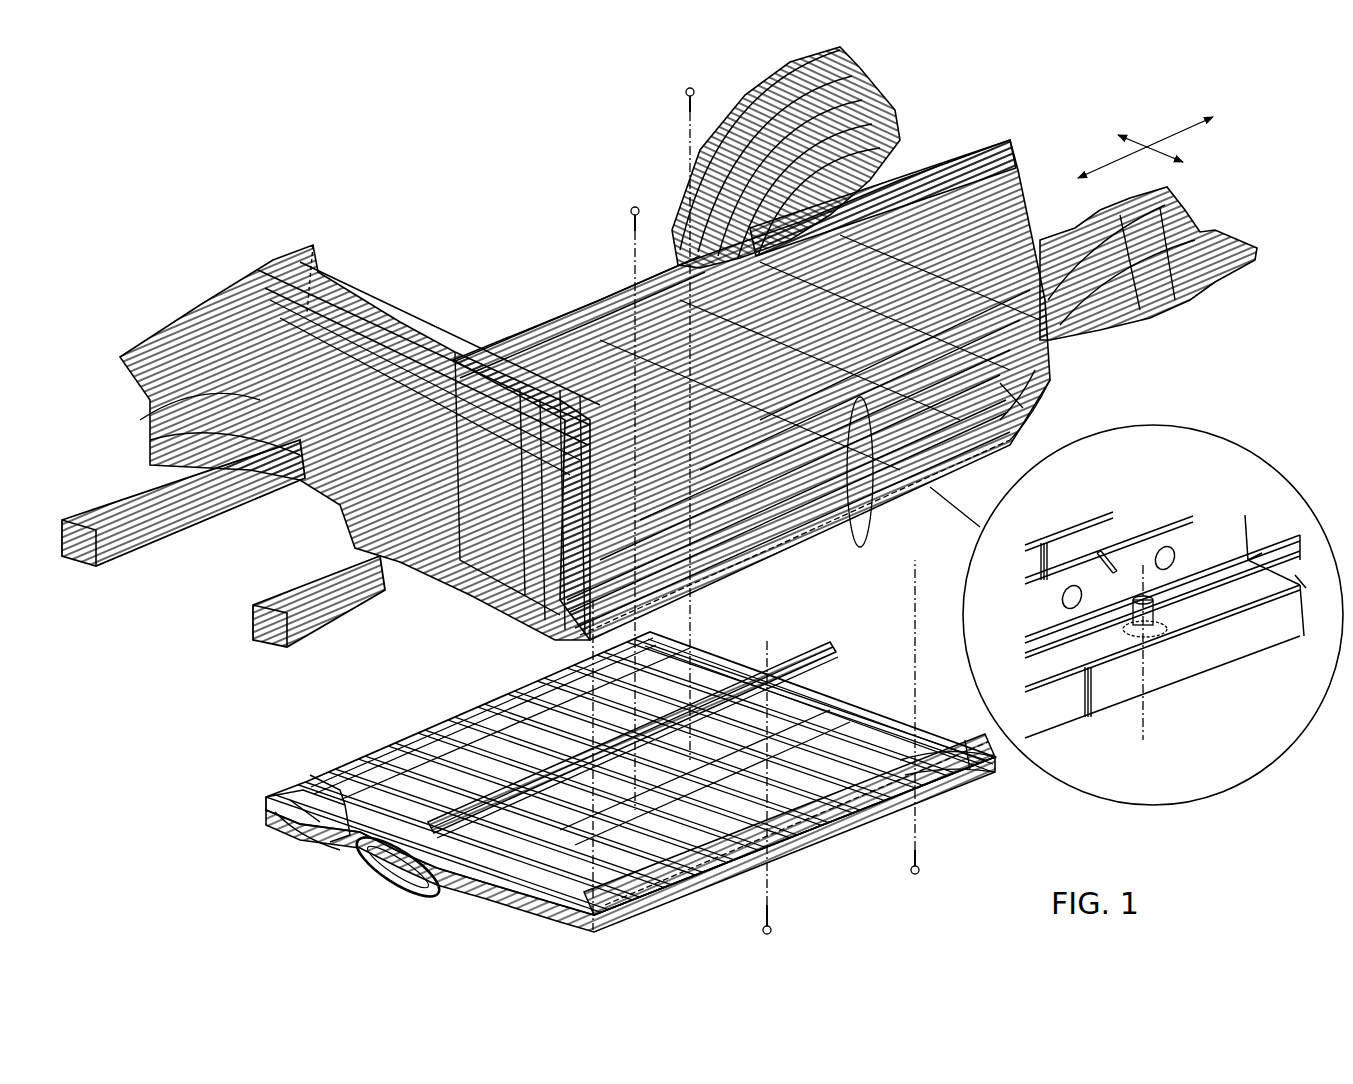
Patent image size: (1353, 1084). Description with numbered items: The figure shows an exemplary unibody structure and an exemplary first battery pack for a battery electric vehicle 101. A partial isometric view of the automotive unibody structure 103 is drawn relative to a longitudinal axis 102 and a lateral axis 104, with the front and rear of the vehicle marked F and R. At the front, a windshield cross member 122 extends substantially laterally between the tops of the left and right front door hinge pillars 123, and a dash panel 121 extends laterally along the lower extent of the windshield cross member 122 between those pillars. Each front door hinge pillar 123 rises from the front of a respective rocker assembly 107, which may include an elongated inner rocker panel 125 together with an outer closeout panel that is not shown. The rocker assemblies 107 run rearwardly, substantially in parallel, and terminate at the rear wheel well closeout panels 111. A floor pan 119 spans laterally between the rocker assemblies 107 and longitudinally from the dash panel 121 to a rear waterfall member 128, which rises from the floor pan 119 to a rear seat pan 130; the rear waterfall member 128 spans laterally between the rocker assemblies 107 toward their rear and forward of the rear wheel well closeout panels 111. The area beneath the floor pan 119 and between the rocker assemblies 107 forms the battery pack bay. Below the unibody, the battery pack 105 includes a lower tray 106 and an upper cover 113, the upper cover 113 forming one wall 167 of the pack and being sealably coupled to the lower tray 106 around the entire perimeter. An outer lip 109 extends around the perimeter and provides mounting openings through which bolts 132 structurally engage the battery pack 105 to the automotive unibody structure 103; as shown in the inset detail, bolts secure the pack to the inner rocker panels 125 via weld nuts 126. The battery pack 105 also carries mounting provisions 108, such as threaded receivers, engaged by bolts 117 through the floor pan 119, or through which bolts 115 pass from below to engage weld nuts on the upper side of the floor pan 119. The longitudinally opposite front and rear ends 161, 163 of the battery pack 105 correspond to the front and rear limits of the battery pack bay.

The battery electric vehicle 101 is at (392, 138).
The longitudinal axis 102 is at (1168, 133).
The automotive unibody structure 103 is at (953, 101).
The lateral axis 104 is at (1178, 155).
The battery pack 105 is at (330, 712).
The lower tray 106 is at (287, 851).
The rocker assembly 107 is at (474, 335).
The mounting provision 108 is at (500, 740).
The outer lip 109 is at (950, 790).
The rear wheel well closeout panel 111 is at (670, 186).
The upper cover 113 is at (890, 745).
The bolt 115 is at (757, 918).
The bolt 117 is at (686, 94).
The floor pan 119 is at (622, 328).
The dash panel 121 is at (292, 492).
The windshield cross member 122 is at (372, 345).
The front door hinge pillar 123 is at (312, 292).
The inner rocker panel 125 is at (506, 337).
The weld nut 126 is at (1160, 612).
The rear waterfall member 128 is at (853, 540).
The rear seat pan 130 is at (1012, 388).
The bolt 132 is at (622, 924).
The front end of battery pack 161 is at (395, 893).
The rear end of battery pack 163 is at (832, 648).
The wall of battery pack 167 is at (445, 755).